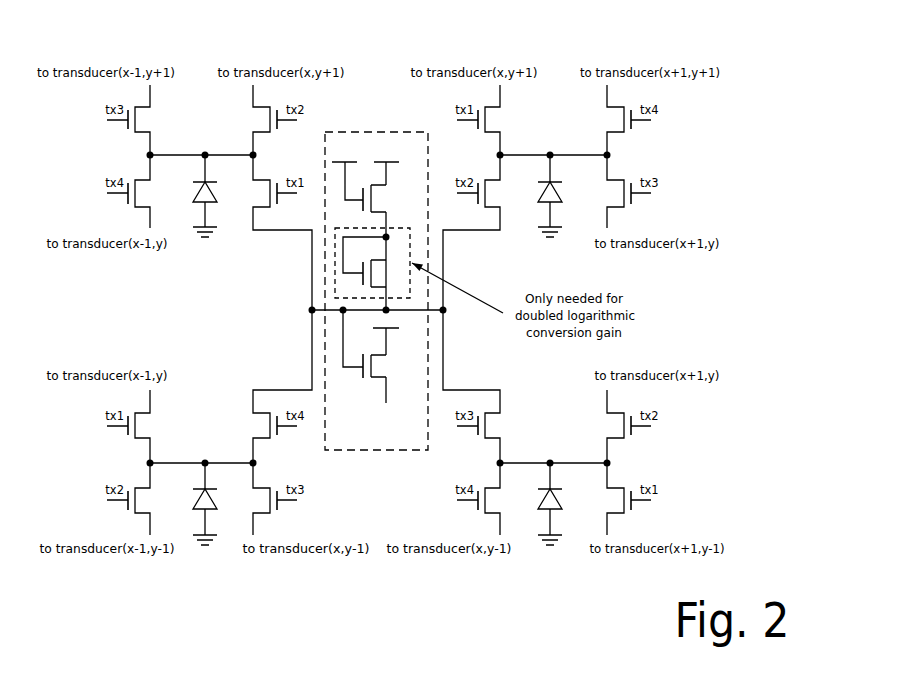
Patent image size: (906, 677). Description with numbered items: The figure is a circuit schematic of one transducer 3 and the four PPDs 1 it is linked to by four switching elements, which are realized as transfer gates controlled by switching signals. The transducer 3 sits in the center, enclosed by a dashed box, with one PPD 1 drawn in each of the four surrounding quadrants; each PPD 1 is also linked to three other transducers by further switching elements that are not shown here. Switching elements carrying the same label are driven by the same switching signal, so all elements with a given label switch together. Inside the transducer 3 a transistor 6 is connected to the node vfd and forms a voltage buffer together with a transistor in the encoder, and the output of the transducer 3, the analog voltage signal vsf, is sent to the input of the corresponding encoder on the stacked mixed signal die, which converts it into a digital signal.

The PPD 1 is at (195, 202).
The transducer 3 is at (367, 326).
The transistor 6 is at (380, 383).